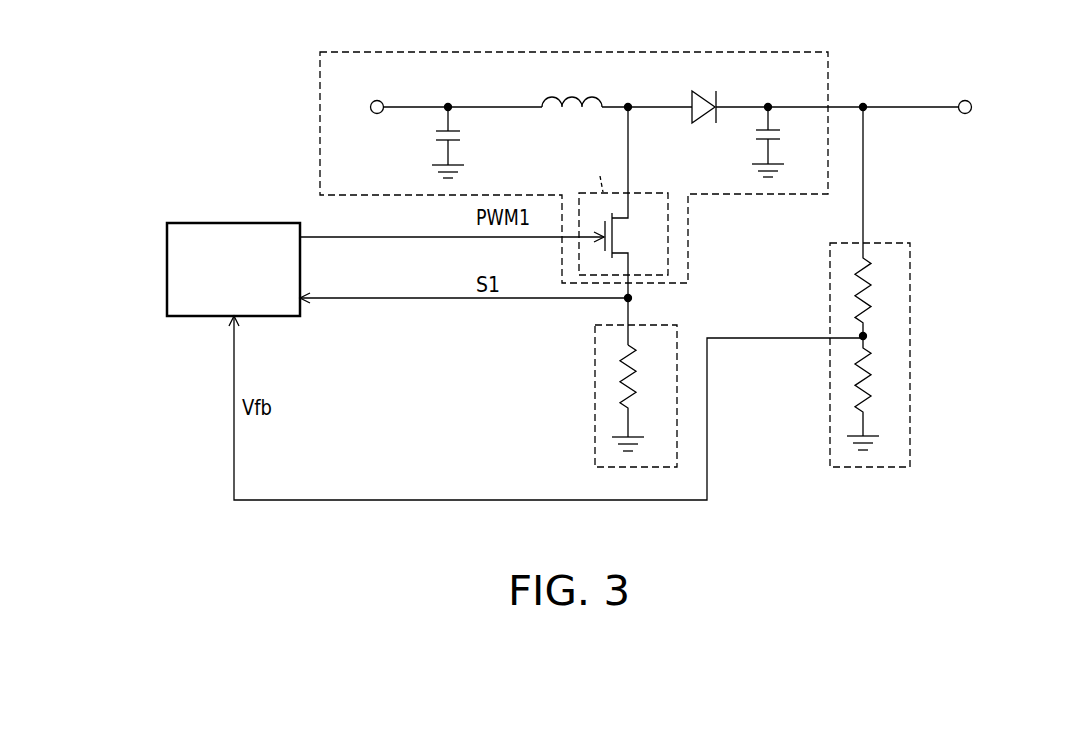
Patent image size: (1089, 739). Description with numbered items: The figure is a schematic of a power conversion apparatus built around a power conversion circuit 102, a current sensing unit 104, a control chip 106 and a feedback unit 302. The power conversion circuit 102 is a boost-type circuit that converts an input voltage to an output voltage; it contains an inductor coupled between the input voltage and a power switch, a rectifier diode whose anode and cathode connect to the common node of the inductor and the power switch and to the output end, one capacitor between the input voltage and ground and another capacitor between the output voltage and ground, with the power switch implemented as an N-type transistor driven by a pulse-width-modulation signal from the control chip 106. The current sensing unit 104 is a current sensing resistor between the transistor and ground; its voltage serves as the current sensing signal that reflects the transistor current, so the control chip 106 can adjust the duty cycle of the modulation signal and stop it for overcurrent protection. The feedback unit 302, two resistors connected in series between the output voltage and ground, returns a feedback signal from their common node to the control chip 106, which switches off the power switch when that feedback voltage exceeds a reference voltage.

The power conversion circuit 102 is at (765, 52).
The current sensing unit 104 is at (595, 410).
The control chip 106 is at (254, 223).
The feedback unit 302 is at (911, 331).